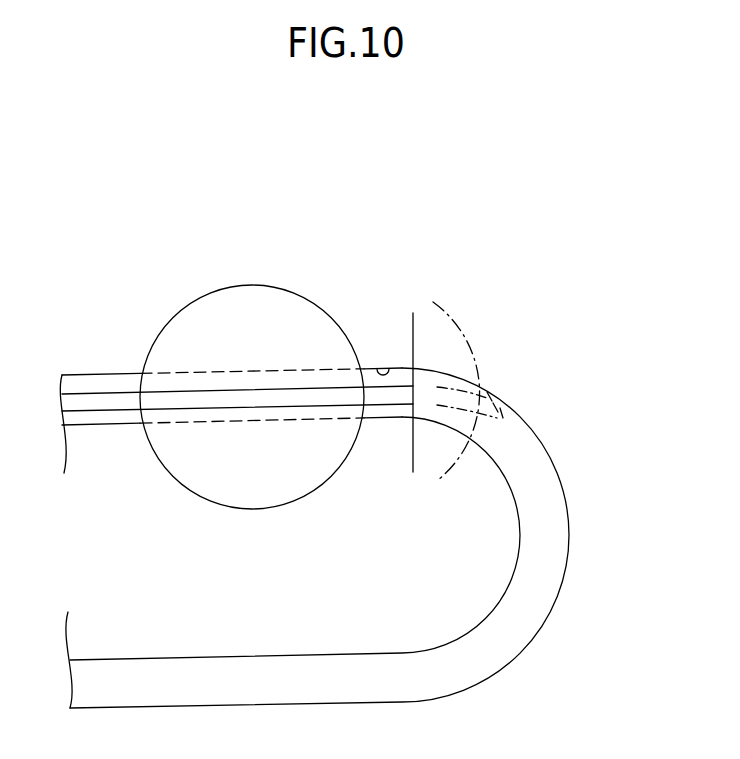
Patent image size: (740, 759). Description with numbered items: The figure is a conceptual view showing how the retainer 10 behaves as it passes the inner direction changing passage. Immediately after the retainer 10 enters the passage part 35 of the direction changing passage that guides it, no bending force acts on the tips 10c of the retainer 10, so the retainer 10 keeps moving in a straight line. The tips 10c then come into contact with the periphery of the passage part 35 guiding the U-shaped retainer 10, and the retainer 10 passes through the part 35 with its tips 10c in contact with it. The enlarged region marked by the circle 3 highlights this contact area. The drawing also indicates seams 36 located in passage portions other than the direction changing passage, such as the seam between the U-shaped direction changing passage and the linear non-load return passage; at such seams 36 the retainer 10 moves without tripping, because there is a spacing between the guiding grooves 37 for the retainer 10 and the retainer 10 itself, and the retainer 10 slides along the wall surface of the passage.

The enlarged region circle 3 is at (270, 310).
The retainer 10 is at (377, 395).
The tips of the retainer 10c is at (497, 401).
The passage part 35 is at (536, 446).
The seams 36 is at (414, 366).
The guiding grooves 37 is at (393, 362).